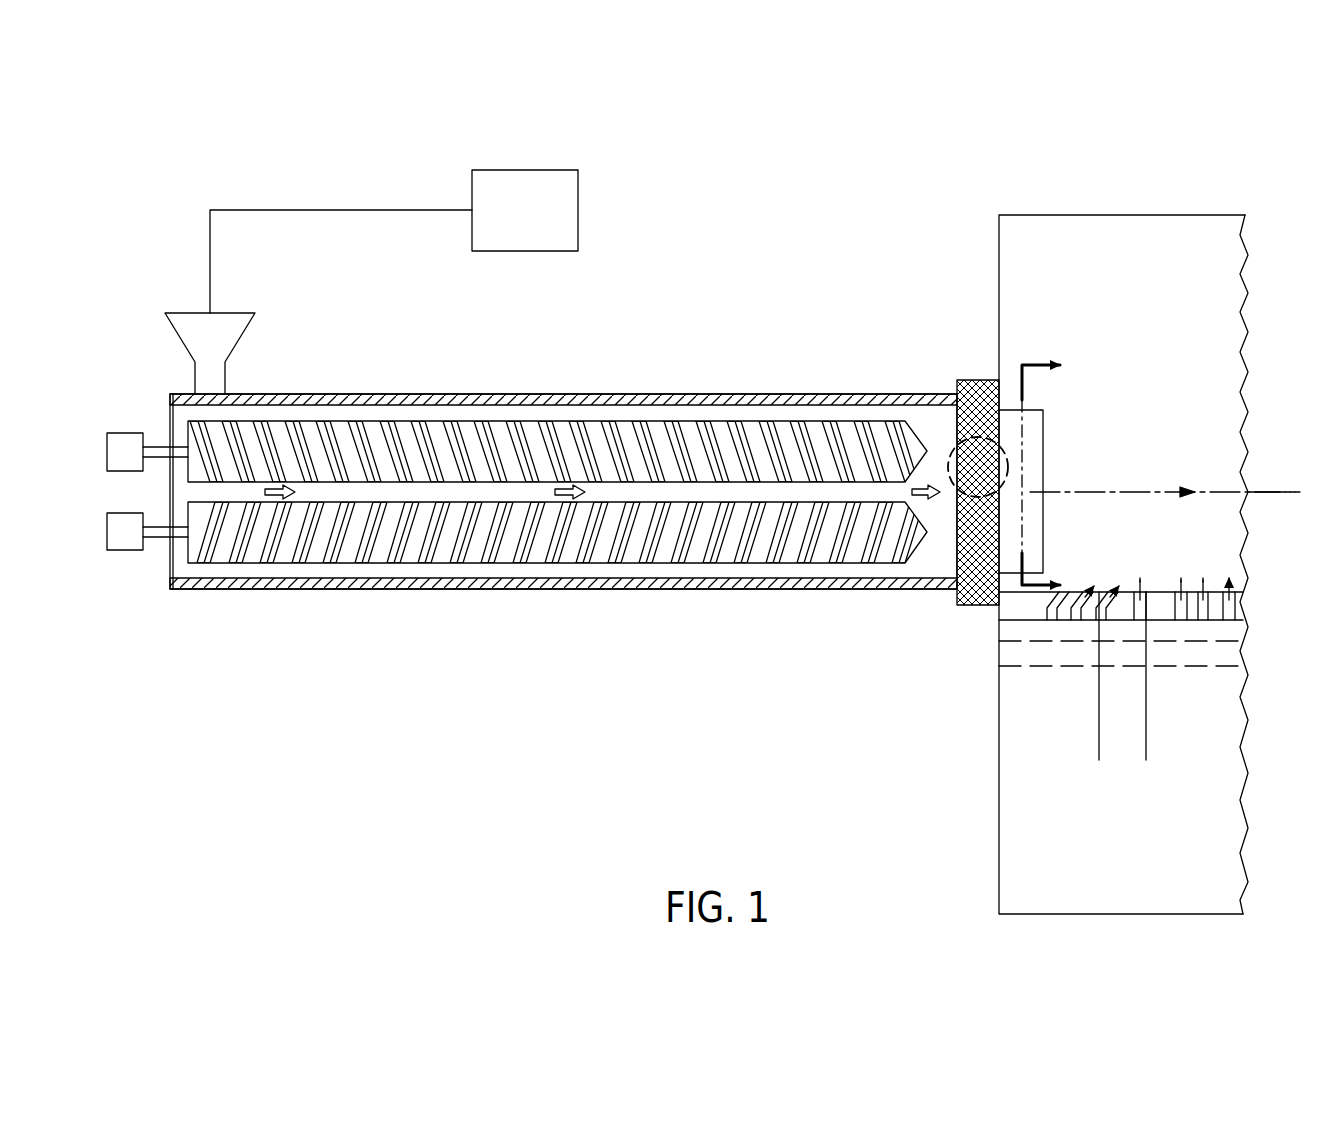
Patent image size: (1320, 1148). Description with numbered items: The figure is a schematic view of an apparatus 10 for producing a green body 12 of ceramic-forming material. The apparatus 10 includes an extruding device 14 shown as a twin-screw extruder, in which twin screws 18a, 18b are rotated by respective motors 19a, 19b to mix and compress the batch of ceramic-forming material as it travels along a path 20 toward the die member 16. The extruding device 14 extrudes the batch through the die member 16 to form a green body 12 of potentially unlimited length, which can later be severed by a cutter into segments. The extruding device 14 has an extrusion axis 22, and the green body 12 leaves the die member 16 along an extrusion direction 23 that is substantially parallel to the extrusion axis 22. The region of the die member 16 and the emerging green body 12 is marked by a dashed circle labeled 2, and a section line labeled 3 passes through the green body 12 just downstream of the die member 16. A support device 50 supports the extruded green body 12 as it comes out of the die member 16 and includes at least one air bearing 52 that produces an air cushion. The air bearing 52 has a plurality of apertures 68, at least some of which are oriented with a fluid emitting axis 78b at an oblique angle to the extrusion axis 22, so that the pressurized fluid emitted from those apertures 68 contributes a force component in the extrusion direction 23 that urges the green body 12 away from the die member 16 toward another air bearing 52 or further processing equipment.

The apparatus 10 is at (827, 152).
The green body 12 is at (1043, 437).
The extruding device 14 is at (707, 320).
The die member 16 is at (965, 380).
The twin screw 18a is at (761, 434).
The twin screw 18b is at (732, 555).
The motor 19a is at (124, 433).
The motor 19b is at (120, 552).
The path 20 is at (566, 498).
The extrusion axis 22 is at (1277, 490).
The extrusion direction 23 is at (1157, 490).
The support device 50 is at (1177, 190).
The air bearing 52 is at (1243, 683).
The apertures 68 is at (1230, 608).
The fluid emitting axis 78b is at (1127, 577).
The detail area of FIG. 2 is at (1008, 474).
The section line of FIG. 3 is at (1061, 467).